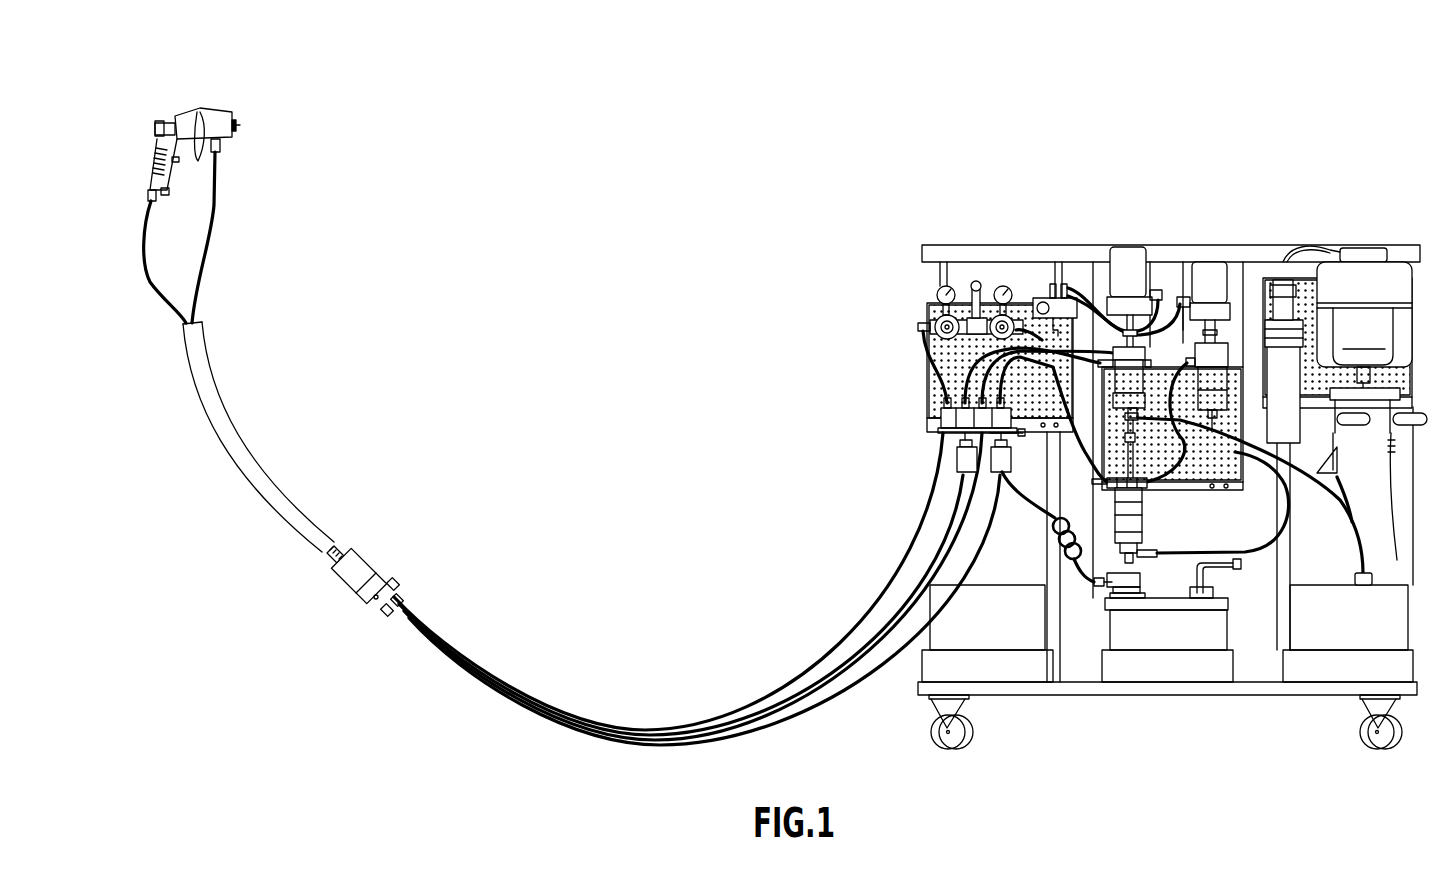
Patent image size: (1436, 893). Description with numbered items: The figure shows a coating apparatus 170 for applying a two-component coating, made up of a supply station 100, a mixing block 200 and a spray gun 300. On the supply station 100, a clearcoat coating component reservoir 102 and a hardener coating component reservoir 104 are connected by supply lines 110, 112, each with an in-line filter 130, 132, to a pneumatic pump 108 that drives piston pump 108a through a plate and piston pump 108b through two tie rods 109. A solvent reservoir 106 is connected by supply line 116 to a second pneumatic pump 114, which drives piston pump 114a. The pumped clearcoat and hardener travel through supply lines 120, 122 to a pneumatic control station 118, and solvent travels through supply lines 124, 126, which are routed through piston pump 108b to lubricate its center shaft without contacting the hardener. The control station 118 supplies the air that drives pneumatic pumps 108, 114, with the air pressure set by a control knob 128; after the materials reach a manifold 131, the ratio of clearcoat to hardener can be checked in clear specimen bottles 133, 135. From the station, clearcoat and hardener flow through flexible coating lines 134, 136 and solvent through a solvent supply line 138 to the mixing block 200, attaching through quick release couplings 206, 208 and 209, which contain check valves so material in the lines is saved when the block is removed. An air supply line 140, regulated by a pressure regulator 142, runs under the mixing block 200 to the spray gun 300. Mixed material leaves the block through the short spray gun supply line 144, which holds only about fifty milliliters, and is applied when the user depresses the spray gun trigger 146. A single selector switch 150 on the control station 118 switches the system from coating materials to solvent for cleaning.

The supply station 100 is at (903, 257).
The coating component reservoir 102 is at (1167, 640).
The coating component reservoir 104 is at (1345, 403).
The solvent reservoir 106 is at (1307, 640).
The pneumatic pump 108 is at (1128, 262).
The piston pump 108a is at (1130, 372).
The piston pump 108b is at (1082, 568).
The tie rods 109 is at (1143, 462).
The supply line 110 is at (1253, 562).
The supply line 112 is at (1210, 545).
The second pneumatic pump 114 is at (1217, 275).
The piston pump 114a is at (1213, 393).
The supply line 116 is at (1360, 520).
The pneumatic control station 118 is at (921, 370).
The supply line 120 is at (942, 380).
The supply line 122 is at (1092, 437).
The supply line 124 is at (1165, 307).
The supply line 126 is at (1047, 470).
The control knob 128 is at (985, 315).
The in-line filter 130 is at (1212, 598).
The manifold 131 is at (941, 413).
The in-line filter 132 is at (1277, 380).
The specimen bottle 133 is at (965, 452).
The flexible coating line 134 is at (402, 642).
The specimen bottle 135 is at (1010, 463).
The flexible coating line 136 is at (420, 617).
The solvent supply line 138 is at (404, 650).
The air supply line 140 is at (149, 272).
The pressure regulator 142 is at (942, 314).
The spray gun supply line 144 is at (207, 228).
The spray gun trigger 146 is at (217, 170).
The selector switch 150 is at (1038, 298).
The coating apparatus 170 is at (299, 86).
The mixing block 200 is at (366, 548).
The quick release coupling 206 is at (404, 602).
The quick release coupling 208 is at (386, 622).
The quick release coupling 209 is at (393, 582).
The spray gun 300 is at (212, 99).